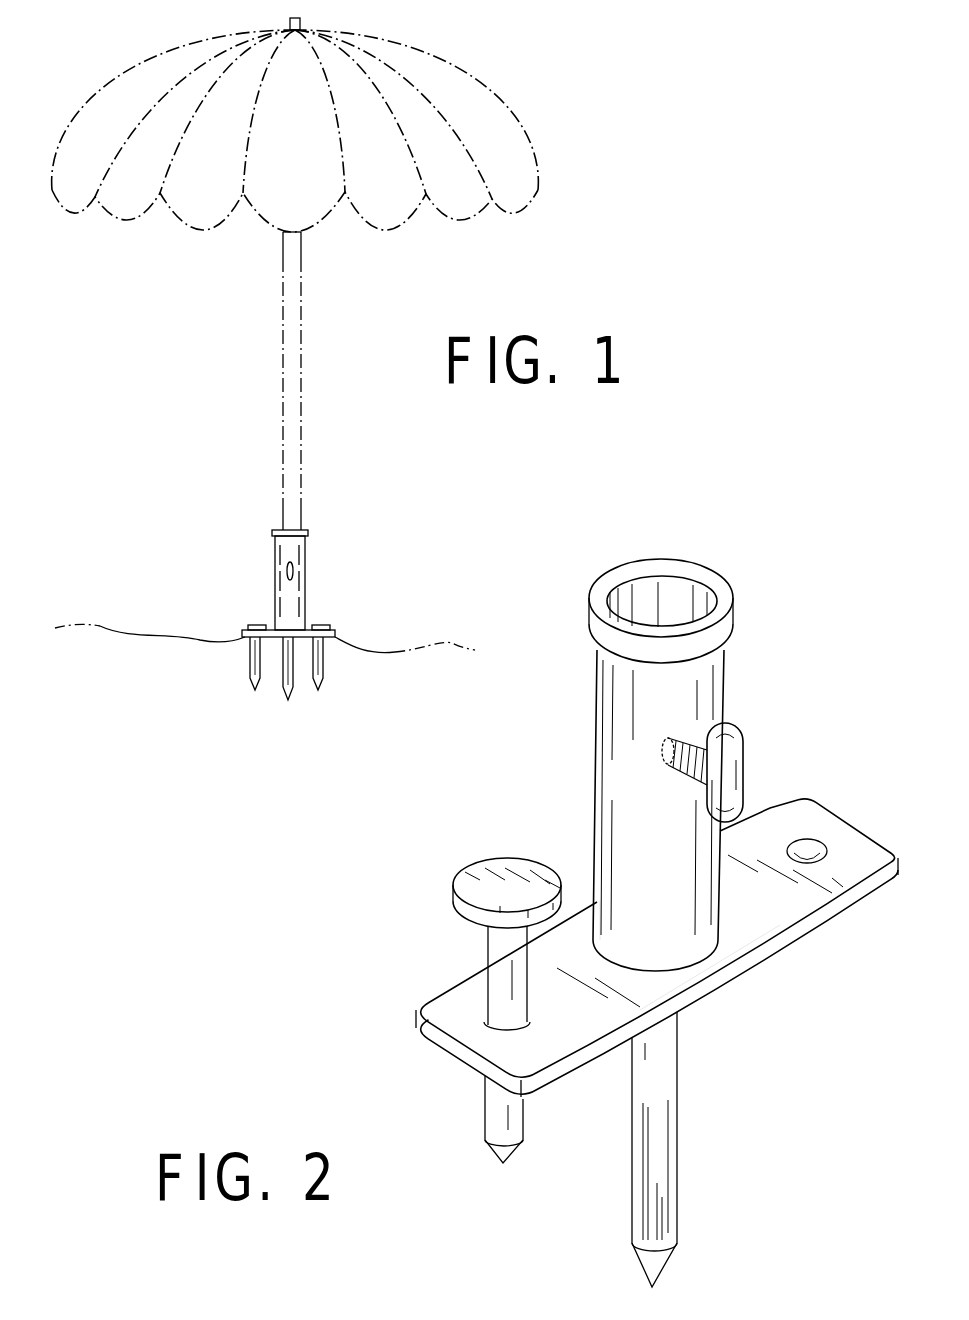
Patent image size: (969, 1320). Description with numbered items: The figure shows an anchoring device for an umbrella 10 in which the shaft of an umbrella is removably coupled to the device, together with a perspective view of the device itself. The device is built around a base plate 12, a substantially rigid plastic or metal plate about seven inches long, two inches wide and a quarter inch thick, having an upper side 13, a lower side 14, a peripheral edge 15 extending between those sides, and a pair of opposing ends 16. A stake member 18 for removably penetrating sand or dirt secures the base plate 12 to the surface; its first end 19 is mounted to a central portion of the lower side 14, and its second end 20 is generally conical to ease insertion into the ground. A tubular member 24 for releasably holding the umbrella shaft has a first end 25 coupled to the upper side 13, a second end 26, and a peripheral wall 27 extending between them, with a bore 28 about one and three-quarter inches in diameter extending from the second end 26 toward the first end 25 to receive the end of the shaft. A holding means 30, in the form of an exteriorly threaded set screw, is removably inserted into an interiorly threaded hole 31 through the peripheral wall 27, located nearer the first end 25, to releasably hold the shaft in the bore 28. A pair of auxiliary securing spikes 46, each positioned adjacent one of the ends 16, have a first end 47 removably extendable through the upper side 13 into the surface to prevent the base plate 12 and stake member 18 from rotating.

In FIG. 1, the anchoring device for an umbrella 10 is at (178, 700).
In FIG. 2, the base plate 12 is at (432, 1007).
In FIG. 2, the upper side 13 is at (810, 805).
In FIG. 1, the lower side 14 is at (242, 642).
In FIG. 2, the peripheral edge 15 is at (780, 946).
In FIG. 2, the opposing ends 16 is at (447, 1043).
In FIG. 1, the stake member 18 is at (293, 680).
In FIG. 1, the first end 19 is at (285, 647).
In FIG. 2, the second end 20 is at (660, 1260).
In FIG. 1, the tubular member 24 is at (300, 551).
In FIG. 2, the first end 25 is at (725, 597).
In FIG. 2, the second end 26 is at (703, 947).
In FIG. 2, the peripheral wall 27 is at (618, 728).
In FIG. 2, the bore 28 is at (667, 597).
In FIG. 2, the holding means 30 is at (733, 747).
In FIG. 2, the hole 31 is at (688, 738).
In FIG. 2, the auxiliary securing spikes 46 is at (477, 897).
In FIG. 2, the first end 47 is at (493, 1152).